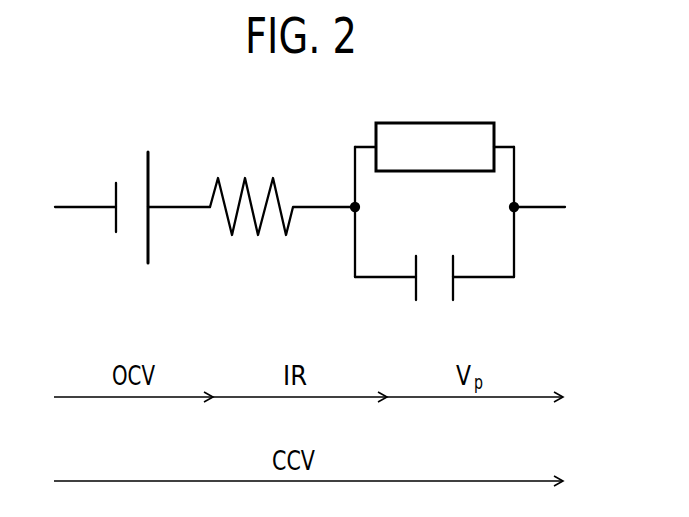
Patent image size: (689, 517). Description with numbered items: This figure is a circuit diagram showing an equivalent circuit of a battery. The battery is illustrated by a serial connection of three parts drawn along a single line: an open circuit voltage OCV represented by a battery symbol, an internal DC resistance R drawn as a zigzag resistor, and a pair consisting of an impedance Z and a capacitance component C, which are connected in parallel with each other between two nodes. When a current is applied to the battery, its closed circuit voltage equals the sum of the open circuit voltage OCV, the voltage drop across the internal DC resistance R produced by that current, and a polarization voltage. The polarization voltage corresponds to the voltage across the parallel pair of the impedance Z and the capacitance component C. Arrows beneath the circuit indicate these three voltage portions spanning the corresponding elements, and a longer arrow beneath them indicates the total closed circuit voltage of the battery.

The open circuit voltage OCV is at (150, 167).
The internal DC resistance R is at (257, 222).
The impedance Z is at (434, 147).
The capacitance component C is at (453, 283).